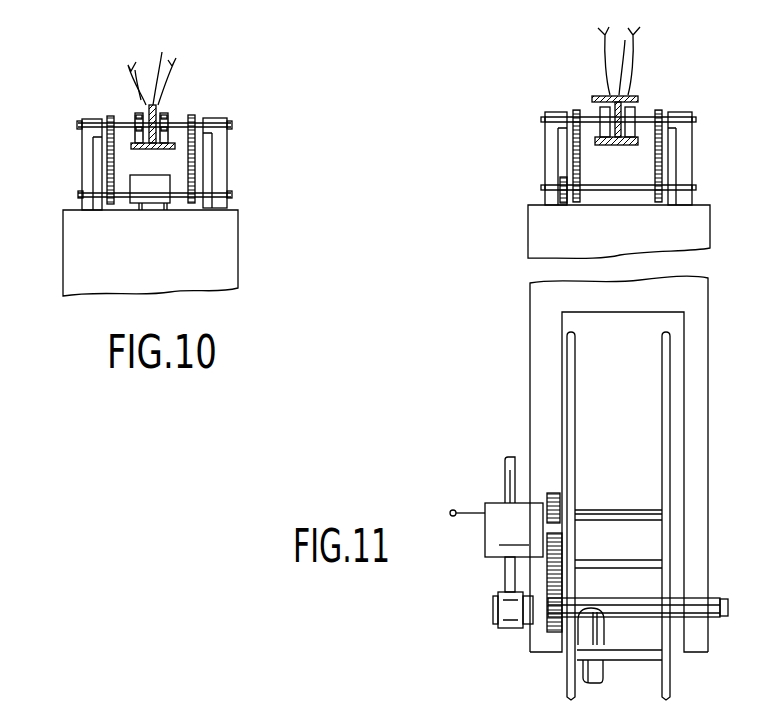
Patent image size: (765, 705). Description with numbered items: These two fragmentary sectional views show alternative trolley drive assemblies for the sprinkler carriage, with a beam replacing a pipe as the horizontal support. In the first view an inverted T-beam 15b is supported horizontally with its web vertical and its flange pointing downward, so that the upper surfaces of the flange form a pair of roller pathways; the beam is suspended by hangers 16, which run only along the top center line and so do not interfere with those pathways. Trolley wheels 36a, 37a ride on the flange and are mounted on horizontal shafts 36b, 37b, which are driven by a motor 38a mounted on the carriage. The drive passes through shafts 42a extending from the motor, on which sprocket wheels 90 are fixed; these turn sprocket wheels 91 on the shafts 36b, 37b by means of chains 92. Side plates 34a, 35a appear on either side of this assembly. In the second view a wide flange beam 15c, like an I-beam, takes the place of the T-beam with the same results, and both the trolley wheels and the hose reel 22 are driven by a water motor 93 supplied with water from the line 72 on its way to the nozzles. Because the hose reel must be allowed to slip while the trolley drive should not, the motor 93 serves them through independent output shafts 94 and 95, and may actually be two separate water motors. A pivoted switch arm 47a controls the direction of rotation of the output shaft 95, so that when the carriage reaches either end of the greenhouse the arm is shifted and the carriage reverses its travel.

In FIG. 10, the hanger 16 is at (156, 100).
In FIG. 11, the hanger 16 is at (619, 57).
In FIG. 10, the T-beam 15b is at (157, 100).
In FIG. 11, the wide flange beam 15c is at (626, 107).
In FIG. 10, the trolley wheel 36a is at (133, 117).
In FIG. 11, the trolley wheel 36a is at (602, 110).
In FIG. 10, the horizontal shaft 36b is at (126, 118).
In FIG. 10, the trolley wheel 37a is at (180, 118).
In FIG. 11, the trolley wheel 37a is at (637, 113).
In FIG. 10, the horizontal shaft 37b is at (187, 116).
In FIG. 10, the sprocket wheel 91 is at (78, 123).
In FIG. 10, the chain 92 is at (108, 159).
In FIG. 10, the support column 34a is at (88, 168).
In FIG. 10, the support column 35a is at (220, 177).
In FIG. 10, the shaft 42a is at (100, 196).
In FIG. 10, the sprocket wheel 90 is at (110, 205).
In FIG. 10, the motor 38a is at (163, 206).
In FIG. 11, the pipe 72 is at (505, 476).
In FIG. 11, the pivoted switch arm 47a is at (453, 510).
In FIG. 11, the water motor 93 is at (514, 530).
In FIG. 11, the output shaft 94 is at (548, 538).
In FIG. 11, the output shaft 95 is at (548, 512).
In FIG. 11, the hose reel 22 is at (682, 667).